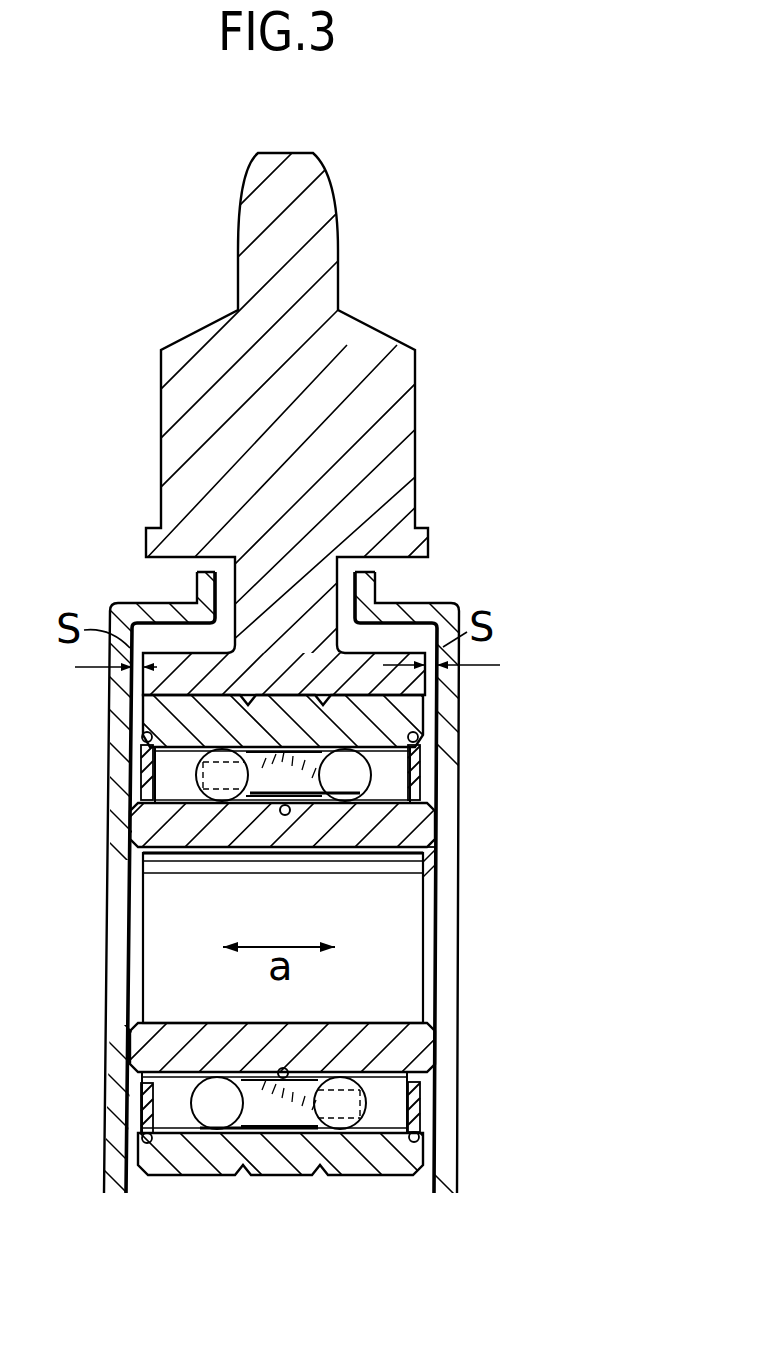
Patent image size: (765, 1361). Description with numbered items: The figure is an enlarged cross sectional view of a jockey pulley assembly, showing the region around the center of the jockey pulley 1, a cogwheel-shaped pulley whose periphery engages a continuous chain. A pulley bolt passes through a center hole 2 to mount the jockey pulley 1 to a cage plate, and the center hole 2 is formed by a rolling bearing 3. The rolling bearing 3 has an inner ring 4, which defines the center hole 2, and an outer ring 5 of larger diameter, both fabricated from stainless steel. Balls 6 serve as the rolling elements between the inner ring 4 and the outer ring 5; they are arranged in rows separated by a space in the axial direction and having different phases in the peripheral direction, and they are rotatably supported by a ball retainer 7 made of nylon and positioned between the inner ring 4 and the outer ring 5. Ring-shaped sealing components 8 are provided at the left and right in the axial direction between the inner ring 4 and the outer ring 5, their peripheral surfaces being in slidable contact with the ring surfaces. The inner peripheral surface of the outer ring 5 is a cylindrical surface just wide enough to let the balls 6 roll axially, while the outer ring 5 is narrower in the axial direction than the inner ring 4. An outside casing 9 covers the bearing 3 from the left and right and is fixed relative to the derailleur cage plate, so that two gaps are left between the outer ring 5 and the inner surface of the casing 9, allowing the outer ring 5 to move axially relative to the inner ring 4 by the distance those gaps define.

The jockey pulley 1 is at (223, 342).
The center hole 2 is at (398, 963).
The rolling bearing 3 is at (341, 887).
The inner ring 4 is at (430, 826).
The outer ring 5 is at (410, 718).
The balls 6 is at (371, 778).
The ball retainer 7 is at (290, 815).
The sealing components 8 is at (145, 765).
The outside casing 9 is at (460, 1080).